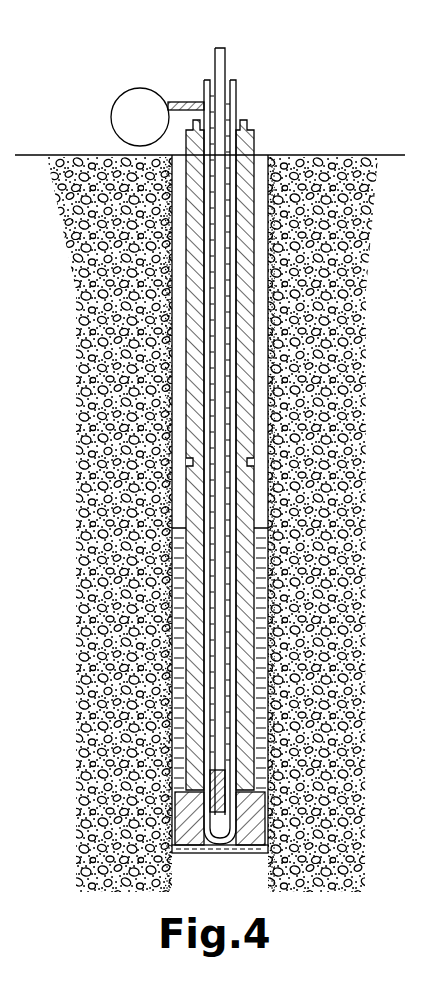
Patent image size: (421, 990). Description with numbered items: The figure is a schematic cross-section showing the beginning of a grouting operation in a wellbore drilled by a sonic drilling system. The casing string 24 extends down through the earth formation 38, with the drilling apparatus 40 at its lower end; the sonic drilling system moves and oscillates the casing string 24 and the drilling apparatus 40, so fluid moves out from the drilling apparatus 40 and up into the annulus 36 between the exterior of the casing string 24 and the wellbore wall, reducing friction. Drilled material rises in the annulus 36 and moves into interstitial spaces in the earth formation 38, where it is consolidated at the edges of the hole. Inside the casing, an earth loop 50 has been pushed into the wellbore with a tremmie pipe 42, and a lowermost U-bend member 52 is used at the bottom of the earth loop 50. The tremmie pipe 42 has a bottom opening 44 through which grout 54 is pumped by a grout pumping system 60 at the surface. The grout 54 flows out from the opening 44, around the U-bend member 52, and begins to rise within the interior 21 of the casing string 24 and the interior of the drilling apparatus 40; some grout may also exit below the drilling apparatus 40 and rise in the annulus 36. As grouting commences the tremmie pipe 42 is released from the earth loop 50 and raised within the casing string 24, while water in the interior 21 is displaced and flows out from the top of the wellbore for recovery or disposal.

The interior of the casing string 21 is at (258, 555).
The casing string 24 is at (245, 247).
The annulus 36 is at (282, 490).
The earth formation 38 is at (307, 392).
The drilling apparatus 40 is at (177, 817).
The tremmie pipe 42 is at (228, 306).
The bottom opening 44 is at (217, 768).
The earth loop 50 is at (228, 576).
The U-bend member 52 is at (230, 850).
The grout 54 is at (185, 102).
The grout pumping system 60 is at (141, 103).